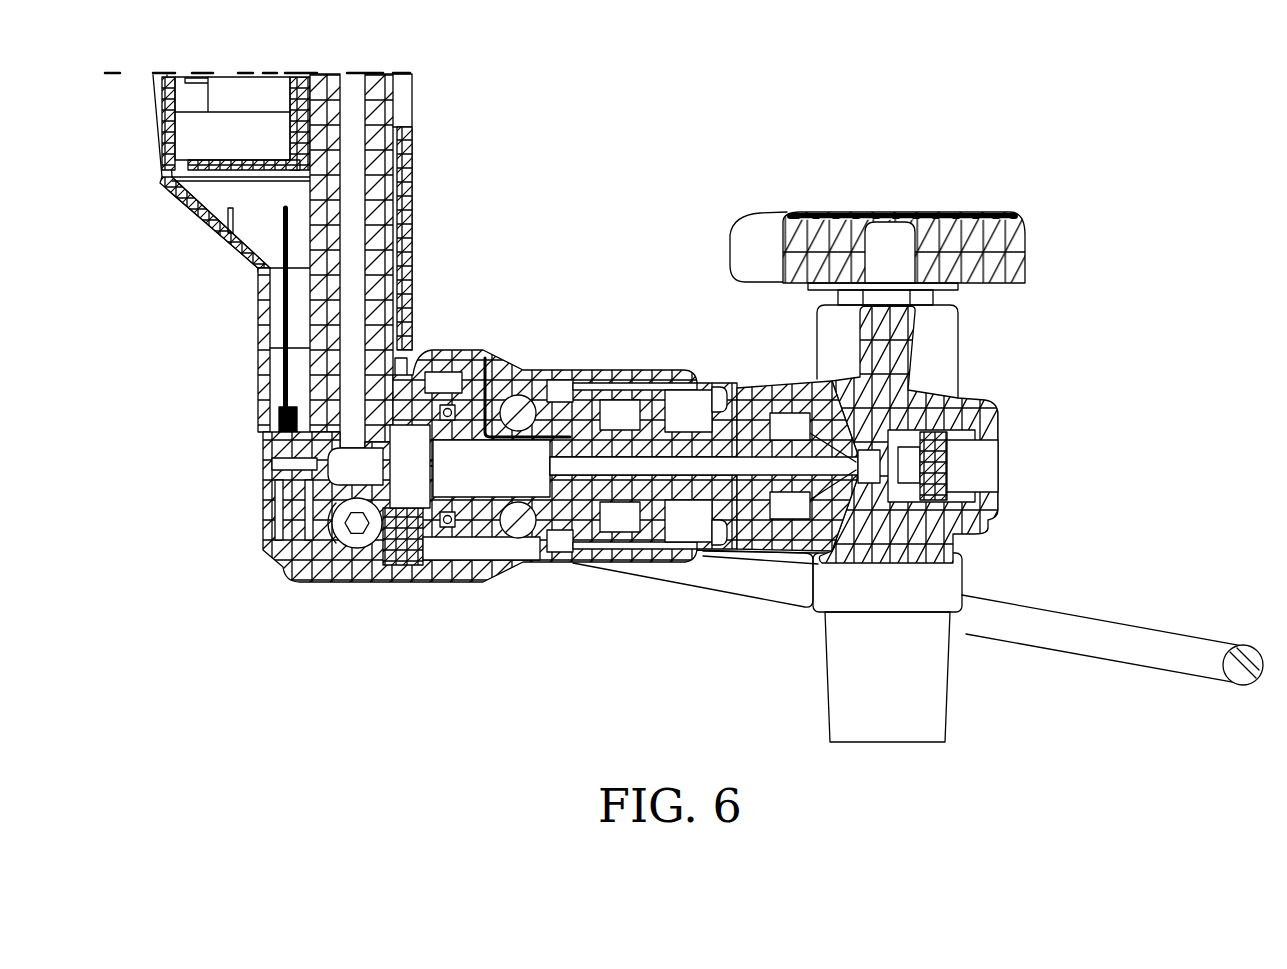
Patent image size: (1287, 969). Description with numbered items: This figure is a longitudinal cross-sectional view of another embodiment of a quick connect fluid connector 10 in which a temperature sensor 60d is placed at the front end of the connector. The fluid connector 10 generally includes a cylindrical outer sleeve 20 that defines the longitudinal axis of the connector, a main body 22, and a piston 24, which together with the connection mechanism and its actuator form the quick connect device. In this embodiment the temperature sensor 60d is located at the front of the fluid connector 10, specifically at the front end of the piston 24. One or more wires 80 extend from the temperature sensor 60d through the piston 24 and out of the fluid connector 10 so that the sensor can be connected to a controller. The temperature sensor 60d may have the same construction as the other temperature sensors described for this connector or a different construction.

The fluid connector 10 is at (562, 335).
The cylindrical outer sleeve 20 is at (470, 578).
The main body 22 is at (410, 397).
The piston 24 is at (737, 443).
The temperature sensor 60d is at (798, 433).
The wires 80 is at (485, 390).